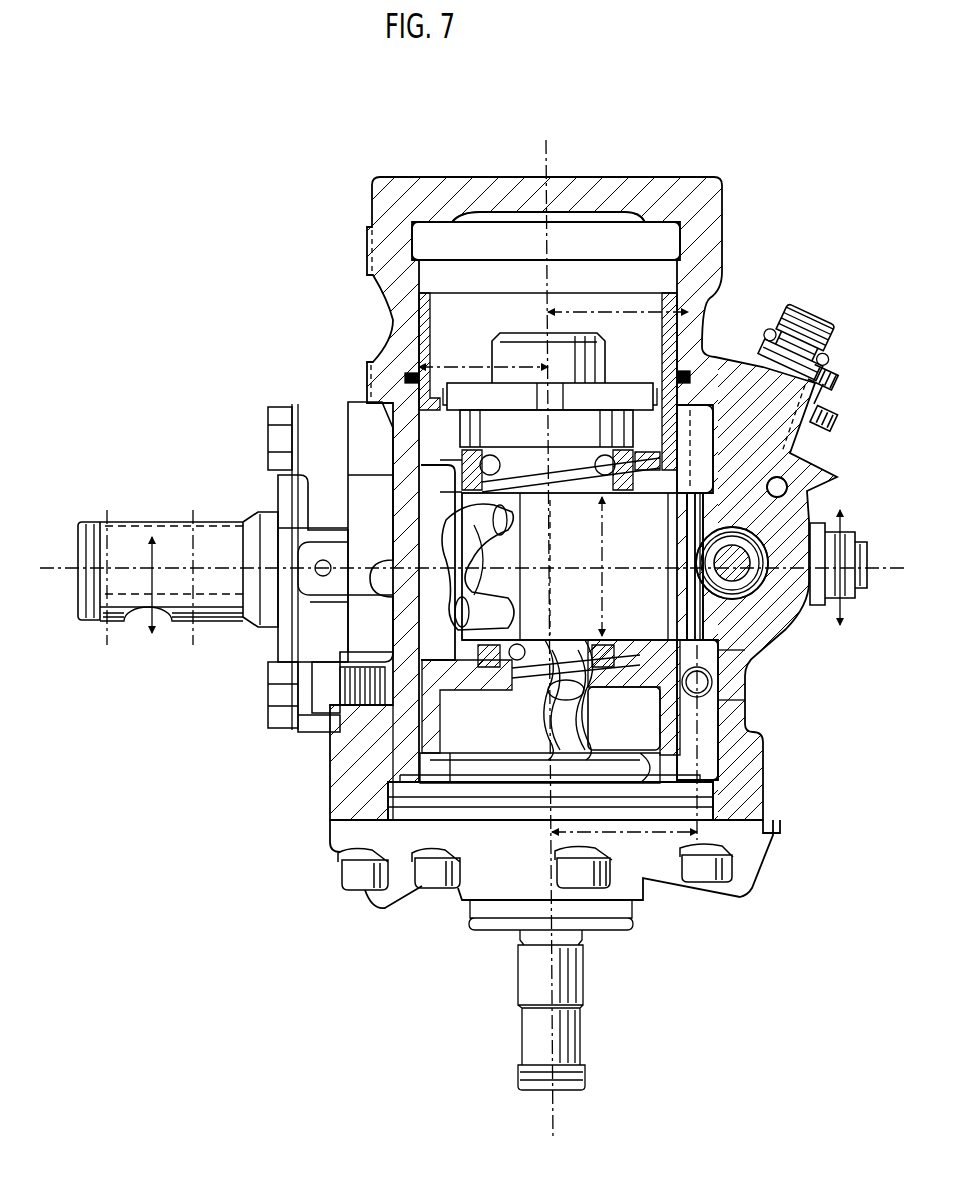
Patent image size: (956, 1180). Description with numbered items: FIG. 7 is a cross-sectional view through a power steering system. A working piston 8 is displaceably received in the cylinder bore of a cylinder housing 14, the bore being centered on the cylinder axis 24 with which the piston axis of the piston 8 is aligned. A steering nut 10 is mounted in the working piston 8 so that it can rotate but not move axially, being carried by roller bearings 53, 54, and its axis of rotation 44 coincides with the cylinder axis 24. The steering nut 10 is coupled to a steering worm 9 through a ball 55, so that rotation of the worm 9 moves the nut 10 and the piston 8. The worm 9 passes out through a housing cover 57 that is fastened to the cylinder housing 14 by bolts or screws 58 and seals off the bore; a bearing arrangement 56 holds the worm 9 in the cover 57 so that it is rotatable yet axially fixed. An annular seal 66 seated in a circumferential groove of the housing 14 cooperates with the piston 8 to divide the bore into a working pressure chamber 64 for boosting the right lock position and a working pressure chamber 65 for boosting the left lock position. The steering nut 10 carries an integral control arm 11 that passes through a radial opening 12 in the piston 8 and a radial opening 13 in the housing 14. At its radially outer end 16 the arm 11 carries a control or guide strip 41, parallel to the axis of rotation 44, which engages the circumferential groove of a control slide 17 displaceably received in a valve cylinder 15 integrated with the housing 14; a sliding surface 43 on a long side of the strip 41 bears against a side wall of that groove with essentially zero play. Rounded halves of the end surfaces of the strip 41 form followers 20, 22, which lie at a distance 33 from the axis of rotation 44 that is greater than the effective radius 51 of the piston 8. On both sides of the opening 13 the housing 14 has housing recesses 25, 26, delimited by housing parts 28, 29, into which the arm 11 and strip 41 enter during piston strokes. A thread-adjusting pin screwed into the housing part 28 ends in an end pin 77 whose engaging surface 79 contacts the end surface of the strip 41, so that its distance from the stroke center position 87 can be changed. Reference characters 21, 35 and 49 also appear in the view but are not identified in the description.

The working piston 8 is at (438, 478).
The steering worm 9 is at (584, 695).
The steering nut 10 is at (470, 680).
The control arm 11 is at (561, 603).
The radial opening 12 is at (628, 430).
The radial opening 13 is at (696, 449).
The cylinder housing 14 is at (768, 722).
The valve cylinder 15 is at (548, 272).
The radially outer end 16 is at (712, 612).
The control slide 17 is at (746, 525).
The follower 20 is at (612, 690).
The channel 21 is at (712, 660).
The follower 22 is at (705, 482).
The cylinder axis 24 is at (545, 165).
The housing recess 25 is at (740, 780).
The housing recess 26 is at (688, 420).
The housing part 28 is at (740, 750).
The housing part 29 is at (745, 362).
The distance 33 is at (598, 308).
The dimension 35 is at (602, 550).
The control strip 41 is at (684, 592).
The sliding surface 43 is at (690, 540).
The axis of rotation 44 is at (548, 460).
The dimension 49 is at (615, 836).
The effective radius 51 is at (456, 364).
The roller bearing 53 is at (456, 458).
The roller bearing 54 is at (612, 690).
The ball 55 is at (436, 585).
The bearing arrangement 56 is at (445, 745).
The housing cover 57 is at (480, 903).
The bolts or screws 58 is at (345, 876).
The working pressure chamber 64 is at (425, 300).
The working pressure chamber 65 is at (430, 768).
The annular seal 66 is at (404, 376).
The end pin 77 is at (750, 716).
The engaging surface 79 is at (712, 690).
The stroke center position 87 is at (232, 520).